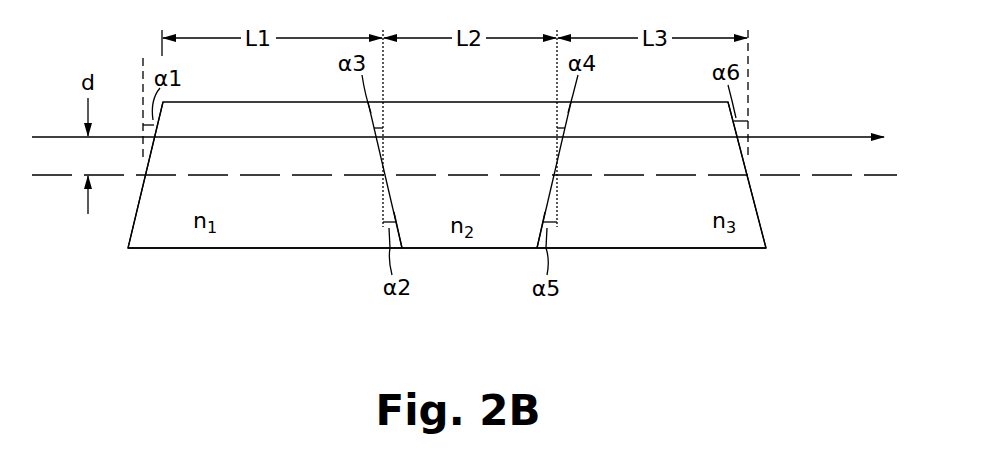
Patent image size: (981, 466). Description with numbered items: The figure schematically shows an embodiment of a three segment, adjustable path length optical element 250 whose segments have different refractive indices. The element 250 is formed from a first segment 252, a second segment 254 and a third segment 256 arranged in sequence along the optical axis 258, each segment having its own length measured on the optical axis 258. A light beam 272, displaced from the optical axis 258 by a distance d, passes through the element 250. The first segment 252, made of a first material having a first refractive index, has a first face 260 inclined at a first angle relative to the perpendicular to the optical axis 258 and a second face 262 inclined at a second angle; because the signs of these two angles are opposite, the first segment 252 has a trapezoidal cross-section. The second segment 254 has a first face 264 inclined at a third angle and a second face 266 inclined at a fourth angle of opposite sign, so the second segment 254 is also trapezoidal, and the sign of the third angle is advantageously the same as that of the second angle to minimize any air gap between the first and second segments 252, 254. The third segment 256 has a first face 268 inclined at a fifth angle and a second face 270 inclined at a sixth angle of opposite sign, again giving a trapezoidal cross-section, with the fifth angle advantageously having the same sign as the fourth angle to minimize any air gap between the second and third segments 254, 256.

The three segment optical element 250 is at (782, 58).
The first segment 252 is at (217, 249).
The second segment 254 is at (493, 249).
The third segment 256 is at (636, 249).
The optical axis 258 is at (843, 176).
The first face 260 is at (129, 238).
The second face 262 is at (372, 118).
The first face 264 is at (400, 246).
The second face 266 is at (540, 242).
The first face 268 is at (567, 118).
The second face 270 is at (764, 238).
The light beam 272 is at (825, 137).